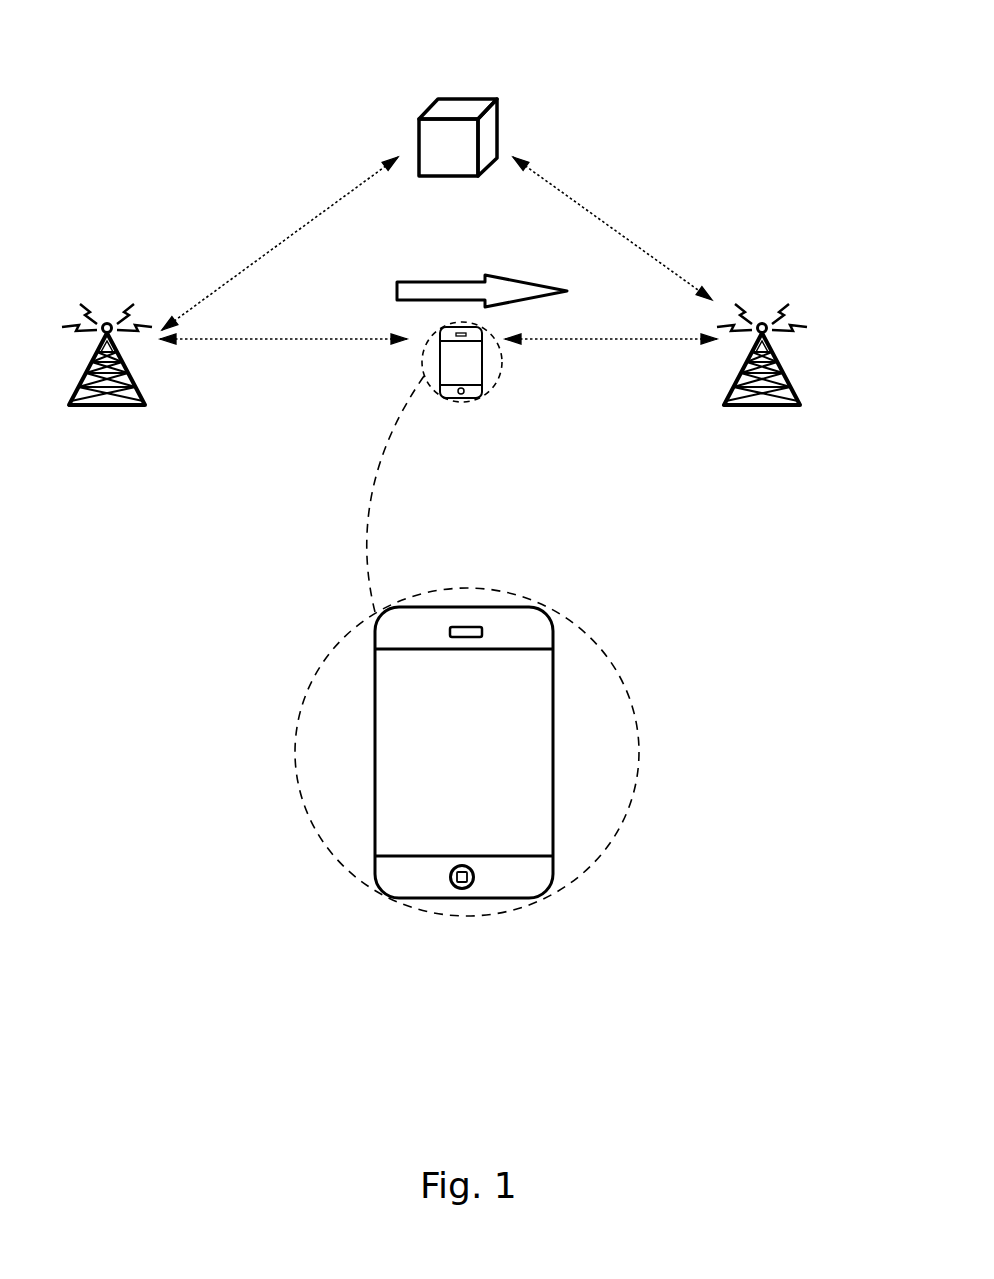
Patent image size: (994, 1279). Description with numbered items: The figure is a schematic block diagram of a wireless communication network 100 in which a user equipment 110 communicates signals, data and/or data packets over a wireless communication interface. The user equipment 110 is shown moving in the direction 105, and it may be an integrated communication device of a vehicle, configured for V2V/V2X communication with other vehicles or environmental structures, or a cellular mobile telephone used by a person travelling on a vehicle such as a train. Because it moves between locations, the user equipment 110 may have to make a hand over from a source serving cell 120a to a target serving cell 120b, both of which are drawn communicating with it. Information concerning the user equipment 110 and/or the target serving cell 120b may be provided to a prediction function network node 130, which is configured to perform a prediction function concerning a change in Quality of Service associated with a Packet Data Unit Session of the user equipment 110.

The wireless communication network 100 is at (836, 73).
The direction 105 is at (482, 278).
The user equipment 110 is at (525, 366).
The source serving cell 120a is at (90, 408).
The target serving cell 120b is at (744, 408).
The prediction function network node 130 is at (458, 110).